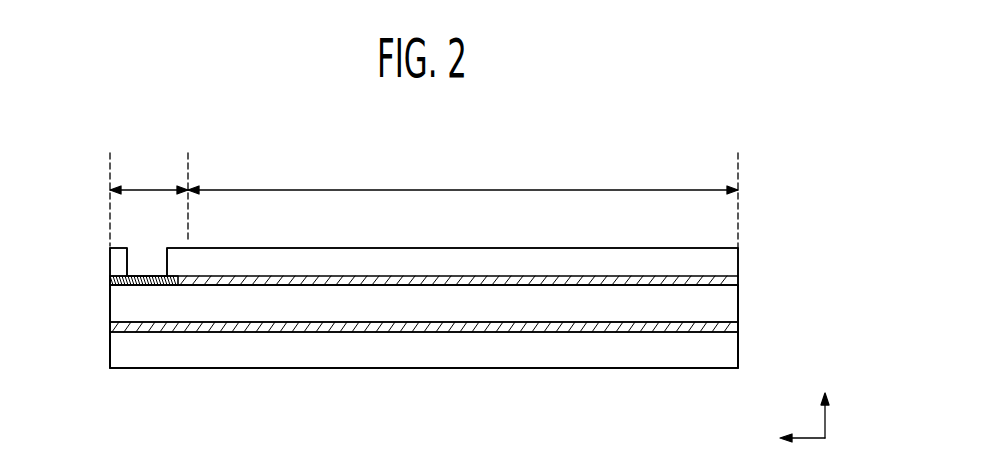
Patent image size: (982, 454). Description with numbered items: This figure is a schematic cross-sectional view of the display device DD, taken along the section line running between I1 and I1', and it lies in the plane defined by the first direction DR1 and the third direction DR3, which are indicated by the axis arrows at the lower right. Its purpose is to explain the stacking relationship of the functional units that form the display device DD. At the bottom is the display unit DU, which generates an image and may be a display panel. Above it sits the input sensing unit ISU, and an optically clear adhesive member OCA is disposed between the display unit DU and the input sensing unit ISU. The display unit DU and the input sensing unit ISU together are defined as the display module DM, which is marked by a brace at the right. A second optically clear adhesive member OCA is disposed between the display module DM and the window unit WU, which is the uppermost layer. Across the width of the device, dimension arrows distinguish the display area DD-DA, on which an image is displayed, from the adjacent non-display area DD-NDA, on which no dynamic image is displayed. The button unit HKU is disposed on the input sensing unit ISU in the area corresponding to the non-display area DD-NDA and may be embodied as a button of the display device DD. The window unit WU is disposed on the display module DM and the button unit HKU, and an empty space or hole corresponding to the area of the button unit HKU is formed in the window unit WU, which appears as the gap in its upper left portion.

The display device DD is at (762, 215).
The window unit WU is at (115, 262).
The button unit HKU is at (140, 275).
The optically clear adhesive member OCA is at (653, 326).
The input sensing unit ISU is at (731, 302).
The display unit DU is at (731, 350).
The display module DM is at (797, 283).
The non-display area DD-NDA is at (149, 199).
The display area DD-DA is at (463, 200).
The section line start I1 is at (110, 326).
The section line end I1' is at (737, 325).
The first direction DR1 is at (784, 440).
The third direction DR3 is at (825, 401).